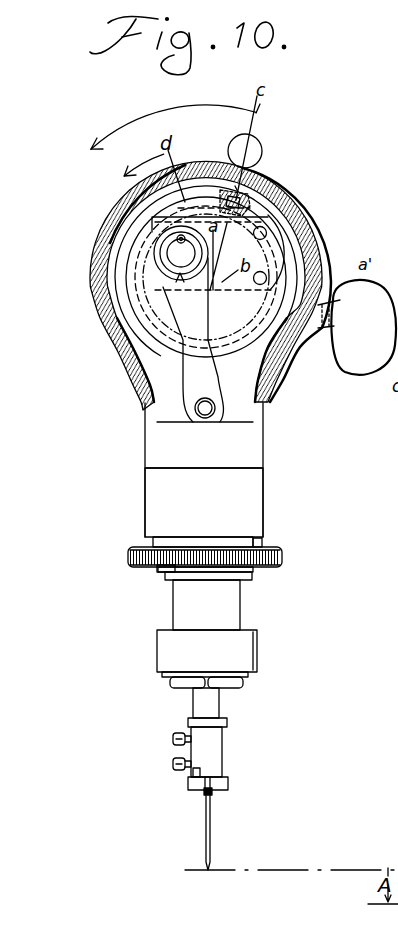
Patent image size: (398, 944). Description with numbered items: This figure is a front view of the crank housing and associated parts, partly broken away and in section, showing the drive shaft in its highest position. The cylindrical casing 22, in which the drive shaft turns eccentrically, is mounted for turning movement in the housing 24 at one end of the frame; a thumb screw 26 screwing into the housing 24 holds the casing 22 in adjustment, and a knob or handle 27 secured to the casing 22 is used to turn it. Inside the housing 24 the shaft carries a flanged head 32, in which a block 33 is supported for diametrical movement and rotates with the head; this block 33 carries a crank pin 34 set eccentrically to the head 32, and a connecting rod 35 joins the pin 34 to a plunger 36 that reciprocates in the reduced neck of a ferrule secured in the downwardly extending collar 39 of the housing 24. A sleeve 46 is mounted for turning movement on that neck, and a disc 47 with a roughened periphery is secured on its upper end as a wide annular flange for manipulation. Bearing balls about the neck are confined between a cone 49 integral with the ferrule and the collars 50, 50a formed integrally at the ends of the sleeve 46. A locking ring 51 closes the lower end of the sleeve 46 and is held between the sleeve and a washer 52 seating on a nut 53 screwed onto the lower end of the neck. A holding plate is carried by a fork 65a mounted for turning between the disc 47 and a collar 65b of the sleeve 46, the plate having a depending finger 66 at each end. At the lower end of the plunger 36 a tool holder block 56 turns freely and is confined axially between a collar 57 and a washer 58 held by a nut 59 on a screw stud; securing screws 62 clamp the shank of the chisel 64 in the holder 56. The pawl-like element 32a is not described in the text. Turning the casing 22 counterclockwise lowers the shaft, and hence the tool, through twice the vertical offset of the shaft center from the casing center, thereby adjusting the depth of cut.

The cylindrical casing 22 is at (142, 305).
The housing 24 is at (130, 345).
The thumb screw 26 is at (355, 362).
The knob 27 is at (256, 151).
The flanged head 32 is at (170, 201).
The pawl 32a is at (252, 216).
The block 33 is at (100, 225).
The crank pin 34 is at (181, 254).
The connecting rod 35 is at (150, 292).
The plunger 36 is at (219, 705).
The collar 39 is at (155, 491).
The sleeve 46 is at (240, 610).
The disc 47 is at (183, 558).
The cone 49 is at (185, 537).
The collar 50 is at (255, 542).
The collar 50a is at (163, 656).
The locking ring 51 is at (160, 673).
The washer 52 is at (165, 679).
The nut 53 is at (244, 681).
The tool holder block 56 is at (222, 755).
The collar 57 is at (190, 720).
The washer 58 is at (195, 772).
The nut 59 is at (228, 784).
The securing screws 62 is at (174, 762).
The chisel 64 is at (211, 831).
The fork 65a is at (160, 568).
The collar 65b is at (165, 580).
The depending finger 66 is at (205, 793).